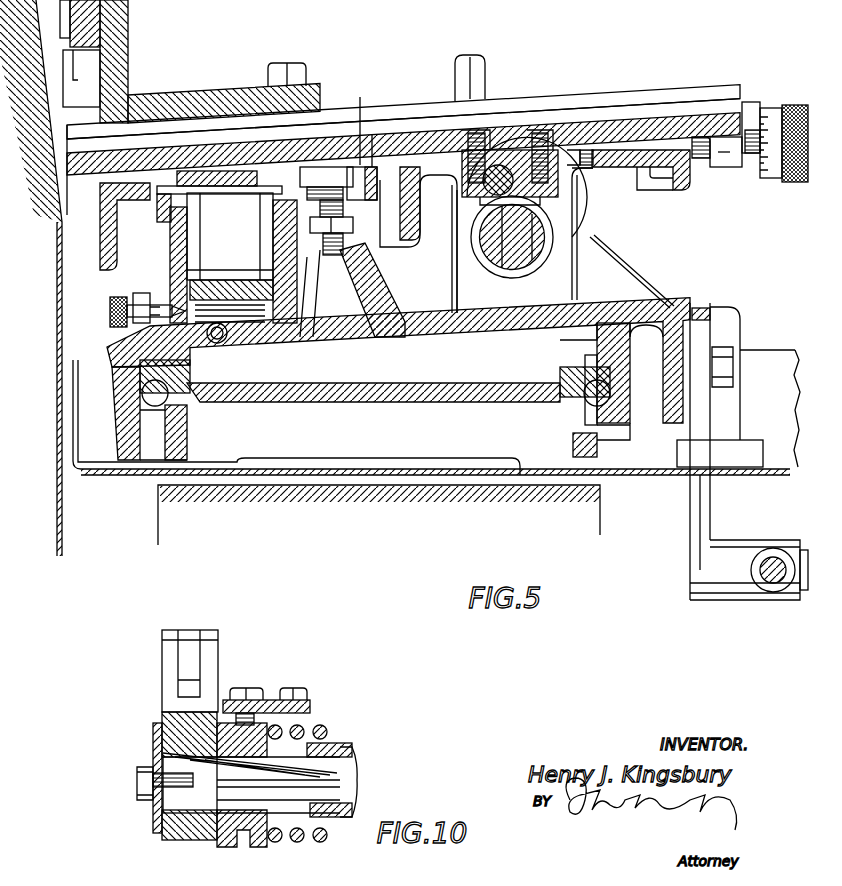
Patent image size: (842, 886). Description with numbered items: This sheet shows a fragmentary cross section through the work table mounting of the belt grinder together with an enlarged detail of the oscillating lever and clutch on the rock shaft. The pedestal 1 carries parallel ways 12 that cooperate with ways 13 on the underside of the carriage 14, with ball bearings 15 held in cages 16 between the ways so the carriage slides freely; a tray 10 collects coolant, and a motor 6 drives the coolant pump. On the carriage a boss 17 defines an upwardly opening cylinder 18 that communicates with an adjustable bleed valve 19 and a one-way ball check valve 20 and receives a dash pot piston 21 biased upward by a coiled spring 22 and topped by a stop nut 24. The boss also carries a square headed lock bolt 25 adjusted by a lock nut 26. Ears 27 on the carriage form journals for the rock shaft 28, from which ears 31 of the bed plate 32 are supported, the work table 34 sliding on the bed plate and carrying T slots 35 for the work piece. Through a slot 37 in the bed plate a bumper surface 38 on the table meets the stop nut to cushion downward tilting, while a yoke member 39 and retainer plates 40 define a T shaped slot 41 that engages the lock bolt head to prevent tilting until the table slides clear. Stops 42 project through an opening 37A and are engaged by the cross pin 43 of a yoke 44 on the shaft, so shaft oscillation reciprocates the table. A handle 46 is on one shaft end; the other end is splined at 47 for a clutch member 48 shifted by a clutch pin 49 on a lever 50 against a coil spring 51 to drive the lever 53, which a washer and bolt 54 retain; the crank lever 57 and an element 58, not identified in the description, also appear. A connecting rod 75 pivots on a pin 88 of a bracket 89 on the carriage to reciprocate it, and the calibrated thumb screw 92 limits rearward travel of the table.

In FIG. 5, the pedestal 1 is at (158, 518).
In FIG. 5, the motor 6 is at (368, 97).
In FIG. 5, the tray 10 is at (102, 480).
In FIG. 5, the parallel ways 12 is at (187, 383).
In FIG. 5, the ways 13 is at (117, 400).
In FIG. 5, the carriage 14 is at (645, 300).
In FIG. 5, the ball bearings 15 is at (167, 400).
In FIG. 5, the cages 16 is at (173, 435).
In FIG. 5, the boss 17 is at (175, 243).
In FIG. 5, the cylinder 18 is at (200, 243).
In FIG. 5, the adjustable bleed valve 19 is at (150, 305).
In FIG. 5, the check valve 20 is at (233, 337).
In FIG. 5, the dash pot piston 21 is at (313, 320).
In FIG. 5, the coiled spring 22 is at (300, 337).
In FIG. 5, the stop nut 24 is at (223, 172).
In FIG. 5, the lock bolt 25 is at (318, 170).
In FIG. 5, the lock nut 26 is at (305, 297).
In FIG. 5, the ears 27 is at (565, 292).
In FIG. 5, the rock shaft 28 is at (575, 270).
In FIG. 10, the rock shaft 28 is at (340, 782).
In FIG. 5, the ears 31 is at (567, 230).
In FIG. 5, the bed plate 32 is at (635, 167).
In FIG. 5, the work table 34 is at (697, 88).
In FIG. 5, the T slots 35 is at (653, 100).
In FIG. 5, the slot 37 is at (150, 205).
In FIG. 5, the opening 37A is at (578, 172).
In FIG. 5, the bumper surface 38 is at (192, 165).
In FIG. 5, the yoke member 39 is at (358, 147).
In FIG. 5, the retainer plates 40 is at (373, 192).
In FIG. 5, the T shaped slot 41 is at (368, 165).
In FIG. 5, the stops 42 is at (478, 150).
In FIG. 5, the cross pin 43 is at (508, 160).
In FIG. 5, the yoke 44 is at (457, 277).
In FIG. 5, the handle 46 is at (462, 63).
In FIG. 10, the splined end 47 is at (320, 752).
In FIG. 10, the clutch member 48 is at (262, 700).
In FIG. 10, the clutch pin 49 is at (240, 700).
In FIG. 10, the lever 50 is at (300, 700).
In FIG. 10, the coil spring 51 is at (322, 725).
In FIG. 10, the lever 53 is at (160, 735).
In FIG. 10, the washer and bolt 54 is at (137, 780).
In FIG. 10, the crank lever 57 is at (212, 650).
In FIG. 10, the slot 58 is at (187, 645).
In FIG. 5, the connecting rod 75 is at (773, 573).
In FIG. 5, the pin 88 is at (803, 550).
In FIG. 5, the bracket 89 is at (697, 493).
In FIG. 5, the thumb screw 92 is at (780, 100).